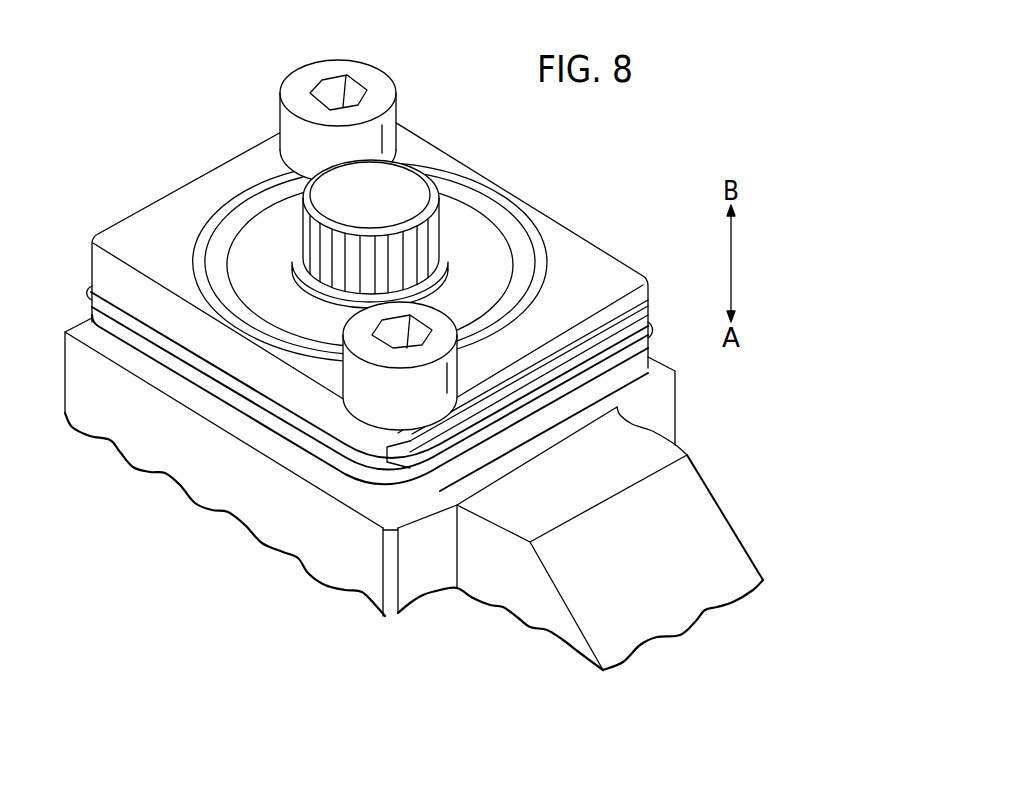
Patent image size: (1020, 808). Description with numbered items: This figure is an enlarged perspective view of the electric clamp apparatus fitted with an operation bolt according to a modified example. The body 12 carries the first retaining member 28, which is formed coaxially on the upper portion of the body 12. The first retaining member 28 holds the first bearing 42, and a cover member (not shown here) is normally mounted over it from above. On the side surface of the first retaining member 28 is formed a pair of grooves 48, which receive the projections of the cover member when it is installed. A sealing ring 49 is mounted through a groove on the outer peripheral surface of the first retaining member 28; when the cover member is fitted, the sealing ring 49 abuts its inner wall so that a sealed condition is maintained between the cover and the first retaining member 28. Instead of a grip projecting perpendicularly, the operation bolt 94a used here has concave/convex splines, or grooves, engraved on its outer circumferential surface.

The body 12 is at (703, 440).
The first retaining member 28 is at (585, 260).
The first bearing 42 is at (262, 230).
The grooves 48 is at (385, 462).
The sealing ring 49 is at (123, 320).
The operation bolt 94a is at (410, 187).